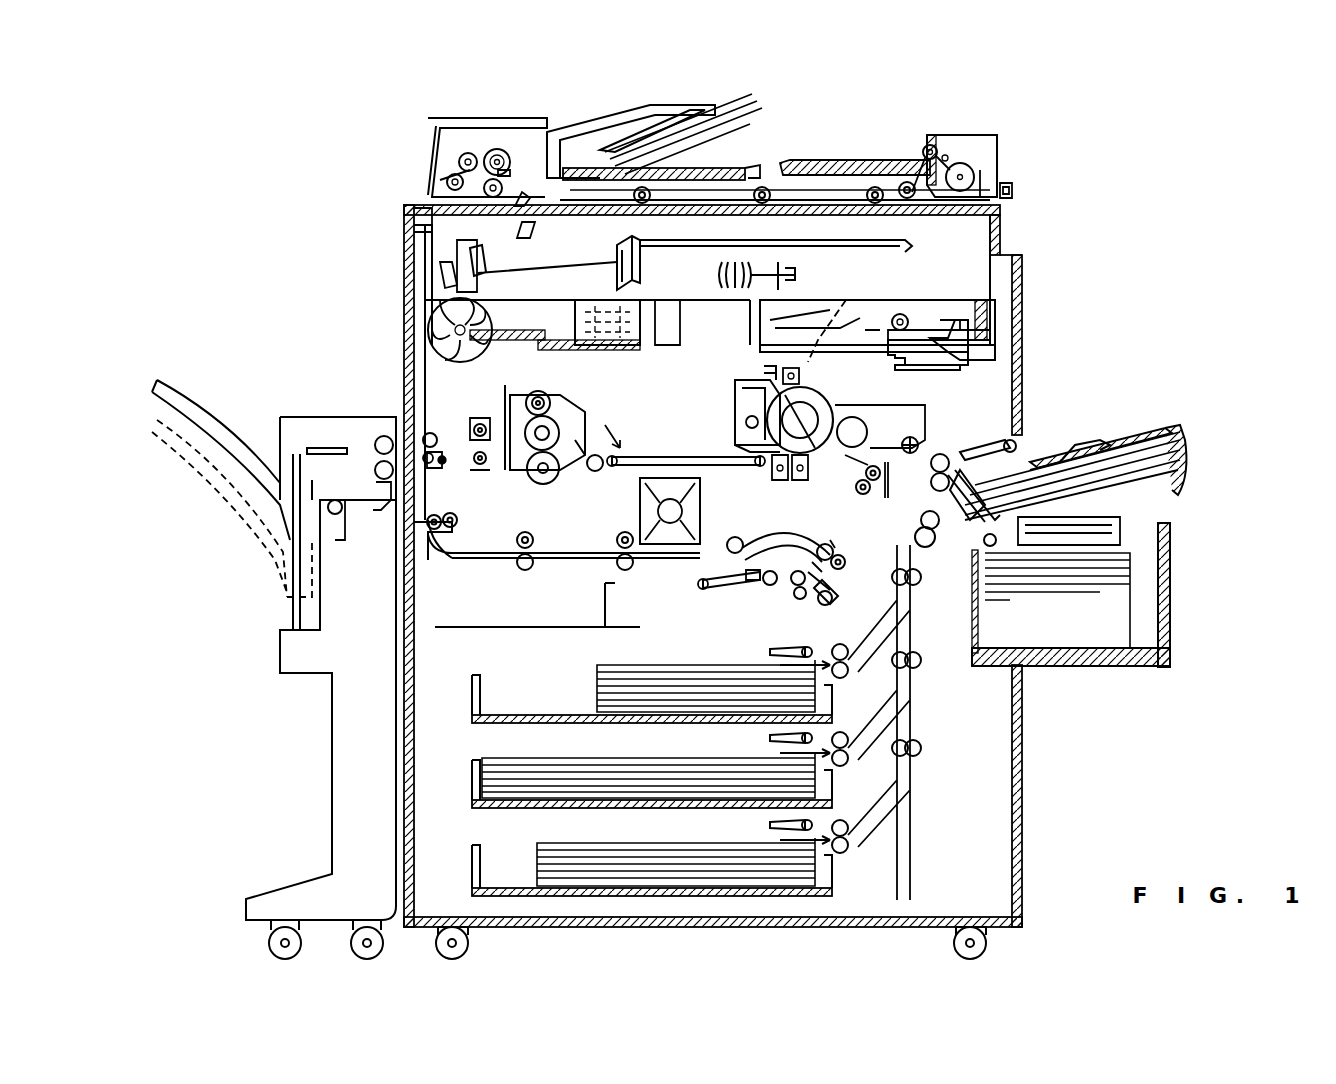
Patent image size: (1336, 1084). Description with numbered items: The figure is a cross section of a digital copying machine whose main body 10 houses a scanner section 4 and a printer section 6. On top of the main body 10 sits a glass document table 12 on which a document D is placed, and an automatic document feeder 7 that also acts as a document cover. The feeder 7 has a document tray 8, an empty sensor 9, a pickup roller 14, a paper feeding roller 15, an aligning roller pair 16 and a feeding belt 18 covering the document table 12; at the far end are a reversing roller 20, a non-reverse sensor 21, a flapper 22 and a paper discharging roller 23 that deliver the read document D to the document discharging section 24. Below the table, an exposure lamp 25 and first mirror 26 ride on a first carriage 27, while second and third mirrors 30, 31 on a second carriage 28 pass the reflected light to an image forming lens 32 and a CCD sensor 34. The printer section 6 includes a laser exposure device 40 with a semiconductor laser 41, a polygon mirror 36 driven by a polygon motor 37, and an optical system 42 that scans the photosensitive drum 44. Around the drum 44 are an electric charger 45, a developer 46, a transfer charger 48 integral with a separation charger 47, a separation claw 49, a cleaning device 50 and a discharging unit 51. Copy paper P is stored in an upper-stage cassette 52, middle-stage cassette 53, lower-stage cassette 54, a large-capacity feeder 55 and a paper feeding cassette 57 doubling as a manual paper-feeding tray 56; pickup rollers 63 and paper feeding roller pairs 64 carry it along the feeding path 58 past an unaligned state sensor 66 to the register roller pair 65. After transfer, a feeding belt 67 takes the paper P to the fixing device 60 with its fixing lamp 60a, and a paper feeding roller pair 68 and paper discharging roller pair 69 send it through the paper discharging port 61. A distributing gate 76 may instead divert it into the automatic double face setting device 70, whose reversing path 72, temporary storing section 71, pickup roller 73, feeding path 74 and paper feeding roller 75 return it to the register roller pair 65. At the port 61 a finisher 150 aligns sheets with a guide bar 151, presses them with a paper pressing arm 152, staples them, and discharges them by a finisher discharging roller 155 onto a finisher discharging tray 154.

The scanner section 4 is at (689, 233).
The printer section 6 is at (940, 404).
The automatic document feeder (ADF) 7 is at (585, 108).
The document tray 8 is at (612, 140).
The empty sensor 9 is at (506, 152).
The main body 10 is at (1022, 775).
The document table 12 is at (843, 200).
The pickup roller 14 is at (468, 152).
The paper feeding roller 15 is at (446, 168).
The aligning roller pair 16 is at (430, 190).
The feeding belt 18 is at (705, 168).
The reversing roller 20 is at (1000, 160).
The non-reverse sensor 21 is at (1012, 192).
The flapper 22 is at (956, 163).
The paper discharging roller 23 is at (924, 148).
The document discharging section 24 is at (762, 170).
The exposure lamp 25 is at (536, 232).
The first mirror 26 is at (490, 256).
The first carriage 27 is at (412, 216).
The second carriage 28 is at (446, 276).
The second mirror 30 is at (440, 262).
The third mirror 31 is at (495, 305).
The image forming lens 32 is at (776, 235).
The CCD sensor 34 is at (798, 278).
The polygon mirror 36 is at (950, 312).
The polygon motor 37 is at (970, 355).
The laser exposure device 40 is at (1008, 328).
The semiconductor laser 41 is at (903, 312).
The optical system 42 is at (745, 320).
The photosensitive drum 44 is at (828, 405).
The electric charger 45 is at (803, 340).
The developer 46 is at (930, 415).
The separation charger 47 is at (700, 505).
The transfer charger 48 is at (740, 544).
The separation claw 49 is at (700, 456).
The cleaning device 50 is at (740, 385).
The discharging unit 51 is at (764, 376).
The upper-stage cassette 52 is at (474, 697).
The middle-stage cassette 53 is at (474, 785).
The lower-stage cassette 54 is at (474, 870).
The large-capacity feeder 55 is at (1090, 640).
The manual paper-feeding tray 56 is at (1085, 440).
The paper feeding cassette 57 is at (1160, 430).
The feeding path 58 is at (862, 600).
The fixing device 60 is at (553, 398).
The fixing lamp 60a is at (520, 385).
The paper discharging port 61 is at (388, 436).
The pickup rollers 63 is at (1015, 440).
The paper feeding roller pairs 64 is at (942, 455).
The register roller pair 65 is at (768, 508).
The unaligned state sensor 66 is at (878, 492).
The feeding belt 67 is at (596, 472).
The paper feeding roller pair 68 is at (482, 465).
The paper discharging roller pair 69 is at (430, 432).
The automatic double face setting device 70 is at (461, 578).
The temporary storing section 71 is at (648, 605).
The reversing path 72 is at (500, 562).
The pickup roller 73 is at (730, 593).
The feeding path 74 is at (828, 550).
The paper feeding roller 75 is at (812, 598).
The distributing gate 76 is at (442, 452).
The finisher 150 is at (280, 430).
The guide bar 151 is at (315, 448).
The paper pressing arm 152 is at (336, 515).
The finisher discharging tray 154 is at (180, 395).
The finisher discharging roller 155 is at (343, 545).
The document D is at (700, 112).
The copy paper P is at (615, 685).